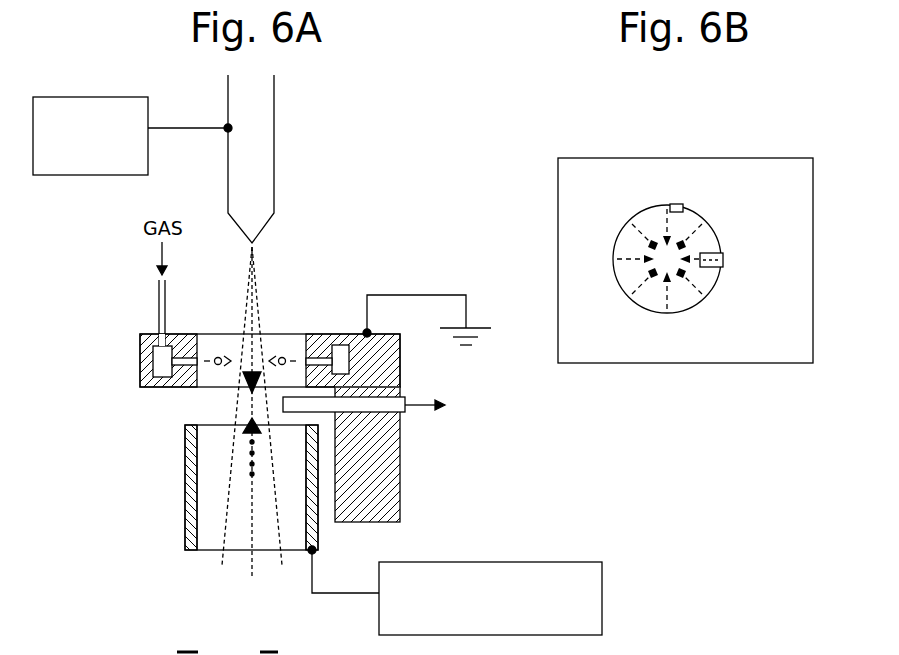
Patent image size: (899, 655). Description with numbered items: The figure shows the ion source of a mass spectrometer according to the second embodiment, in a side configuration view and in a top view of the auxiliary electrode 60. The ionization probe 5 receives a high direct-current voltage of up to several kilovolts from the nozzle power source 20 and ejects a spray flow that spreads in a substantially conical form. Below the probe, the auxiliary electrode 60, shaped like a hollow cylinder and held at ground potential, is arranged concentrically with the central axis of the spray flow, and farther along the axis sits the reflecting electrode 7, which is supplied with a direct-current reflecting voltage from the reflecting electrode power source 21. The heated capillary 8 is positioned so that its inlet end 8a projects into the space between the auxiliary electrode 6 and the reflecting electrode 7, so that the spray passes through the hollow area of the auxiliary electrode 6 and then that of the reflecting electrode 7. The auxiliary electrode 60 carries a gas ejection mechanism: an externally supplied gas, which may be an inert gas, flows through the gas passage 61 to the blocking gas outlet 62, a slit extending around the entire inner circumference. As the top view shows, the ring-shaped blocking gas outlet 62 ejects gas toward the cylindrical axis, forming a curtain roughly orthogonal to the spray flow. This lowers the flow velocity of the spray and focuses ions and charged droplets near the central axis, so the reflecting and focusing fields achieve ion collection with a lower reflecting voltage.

In FIG. 6A, the nozzle power source 20 is at (114, 97).
In FIG. 6A, the ionization probe 5 is at (274, 173).
In FIG. 6A, the auxiliary electrode 60 is at (140, 354).
In FIG. 6A, the gas passage 61 is at (252, 330).
In FIG. 6A, the blocking gas outlet 62 is at (207, 357).
In FIG. 6B, the blocking gas outlet 62 is at (683, 210).
In FIG. 6A, the reflecting electrode 7 is at (185, 470).
In FIG. 6A, the heated capillary 8 is at (310, 412).
In FIG. 6B, the heated capillary 8 is at (722, 249).
In FIG. 6B, the inlet end 8a is at (776, 297).
In FIG. 6A, the reflecting electrode power source 21 is at (602, 590).
In FIG. 6B, the auxiliary electrode 6 is at (635, 173).